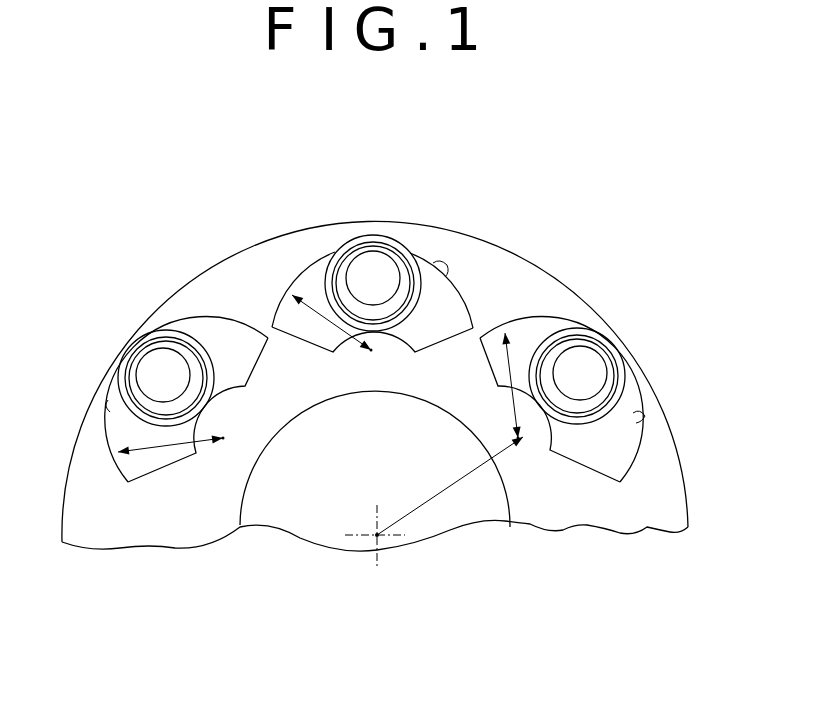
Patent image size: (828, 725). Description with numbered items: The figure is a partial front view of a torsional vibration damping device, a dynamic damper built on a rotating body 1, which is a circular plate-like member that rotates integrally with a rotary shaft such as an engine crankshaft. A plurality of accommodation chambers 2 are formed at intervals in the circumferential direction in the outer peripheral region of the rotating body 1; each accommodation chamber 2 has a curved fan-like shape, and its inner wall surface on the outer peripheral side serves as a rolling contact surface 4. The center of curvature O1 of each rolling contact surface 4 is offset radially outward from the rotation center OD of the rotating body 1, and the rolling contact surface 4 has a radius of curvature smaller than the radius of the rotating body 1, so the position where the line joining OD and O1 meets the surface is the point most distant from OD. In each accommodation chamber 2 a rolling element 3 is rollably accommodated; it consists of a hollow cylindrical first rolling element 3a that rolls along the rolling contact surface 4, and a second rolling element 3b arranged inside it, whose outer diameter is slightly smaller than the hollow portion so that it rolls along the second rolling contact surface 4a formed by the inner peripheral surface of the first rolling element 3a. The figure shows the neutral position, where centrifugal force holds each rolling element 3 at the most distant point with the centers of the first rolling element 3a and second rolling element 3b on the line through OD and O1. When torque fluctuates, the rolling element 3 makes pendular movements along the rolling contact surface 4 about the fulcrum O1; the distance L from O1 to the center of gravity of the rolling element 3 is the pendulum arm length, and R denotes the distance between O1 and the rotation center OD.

The rotating body 1 is at (672, 502).
The accommodation chamber 2 is at (288, 292).
The rolling element 3 is at (368, 355).
The first rolling element 3a is at (338, 235).
The second rolling element 3b is at (372, 275).
The rolling contact surface 4 is at (445, 262).
The second rolling contact surface 4a is at (395, 310).
The length of arm of pendular movements L is at (322, 406).
The distance between center of curvature and rotation center R is at (450, 486).
The center of curvature of rolling contact surface O1 is at (372, 353).
The rotation center of rotating body OD is at (390, 543).